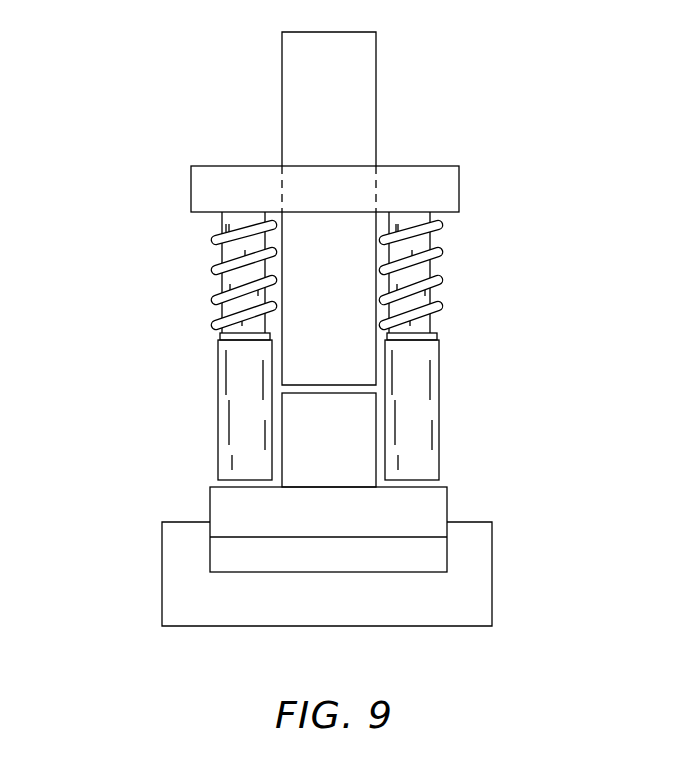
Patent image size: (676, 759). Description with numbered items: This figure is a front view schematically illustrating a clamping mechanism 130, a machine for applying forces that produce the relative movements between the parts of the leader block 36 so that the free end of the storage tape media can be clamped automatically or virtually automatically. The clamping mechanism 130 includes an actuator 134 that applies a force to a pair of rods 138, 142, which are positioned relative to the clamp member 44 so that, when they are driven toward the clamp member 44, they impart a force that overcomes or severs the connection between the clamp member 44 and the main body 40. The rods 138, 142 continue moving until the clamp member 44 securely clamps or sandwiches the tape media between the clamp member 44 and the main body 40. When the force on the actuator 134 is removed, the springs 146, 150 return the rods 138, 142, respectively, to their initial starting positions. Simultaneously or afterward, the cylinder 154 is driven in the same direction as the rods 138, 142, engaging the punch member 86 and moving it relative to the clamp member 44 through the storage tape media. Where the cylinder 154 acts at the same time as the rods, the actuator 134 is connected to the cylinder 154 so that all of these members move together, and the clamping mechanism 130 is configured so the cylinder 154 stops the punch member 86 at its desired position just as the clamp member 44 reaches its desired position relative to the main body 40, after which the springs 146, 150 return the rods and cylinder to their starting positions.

The leader block 36 is at (311, 573).
The main body 40 is at (481, 576).
The clamp member 44 is at (438, 504).
The punch member 86 is at (292, 430).
The clamping mechanism 130 is at (336, 208).
The actuator 134 is at (199, 177).
The rod 138 is at (220, 252).
The rod 142 is at (440, 302).
The spring 146 is at (222, 302).
The spring 150 is at (436, 246).
The cylinder 154 is at (365, 66).